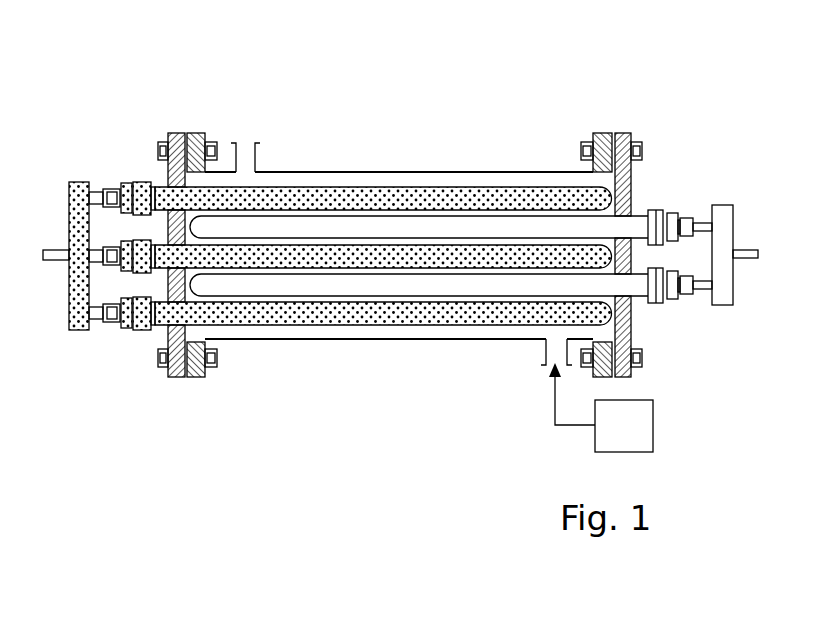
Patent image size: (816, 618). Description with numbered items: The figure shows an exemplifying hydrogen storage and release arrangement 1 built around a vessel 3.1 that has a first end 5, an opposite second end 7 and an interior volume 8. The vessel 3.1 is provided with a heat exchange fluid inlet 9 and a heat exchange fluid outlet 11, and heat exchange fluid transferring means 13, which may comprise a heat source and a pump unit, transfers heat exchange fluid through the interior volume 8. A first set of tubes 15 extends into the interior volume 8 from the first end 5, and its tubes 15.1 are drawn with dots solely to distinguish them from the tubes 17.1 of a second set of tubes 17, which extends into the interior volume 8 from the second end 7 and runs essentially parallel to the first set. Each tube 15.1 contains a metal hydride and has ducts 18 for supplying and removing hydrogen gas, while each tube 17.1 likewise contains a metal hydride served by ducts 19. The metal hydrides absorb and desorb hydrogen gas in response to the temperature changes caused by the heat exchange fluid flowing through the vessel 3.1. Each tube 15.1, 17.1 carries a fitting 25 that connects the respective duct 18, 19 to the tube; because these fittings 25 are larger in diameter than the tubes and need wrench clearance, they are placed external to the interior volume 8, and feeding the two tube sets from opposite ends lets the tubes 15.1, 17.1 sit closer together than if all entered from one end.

The hydrogen storage and release arrangement 1 is at (170, 65).
The vessel 3.1 is at (342, 92).
The first end 5 is at (167, 337).
The second end 7 is at (633, 322).
The interior volume 8 is at (447, 175).
The heat exchange fluid inlet 9 is at (543, 352).
The heat exchange fluid outlet 11 is at (262, 163).
The heat exchange fluid transferring means 13 is at (601, 407).
The first set of tubes 15 is at (312, 411).
The tubes of the first set 15.1 is at (312, 313).
The second set of tubes 17 is at (465, 93).
The tubes of the second set 17.1 is at (397, 285).
The ducts 18 is at (100, 197).
The ducts 19 is at (706, 278).
The fitting 25 is at (657, 283).